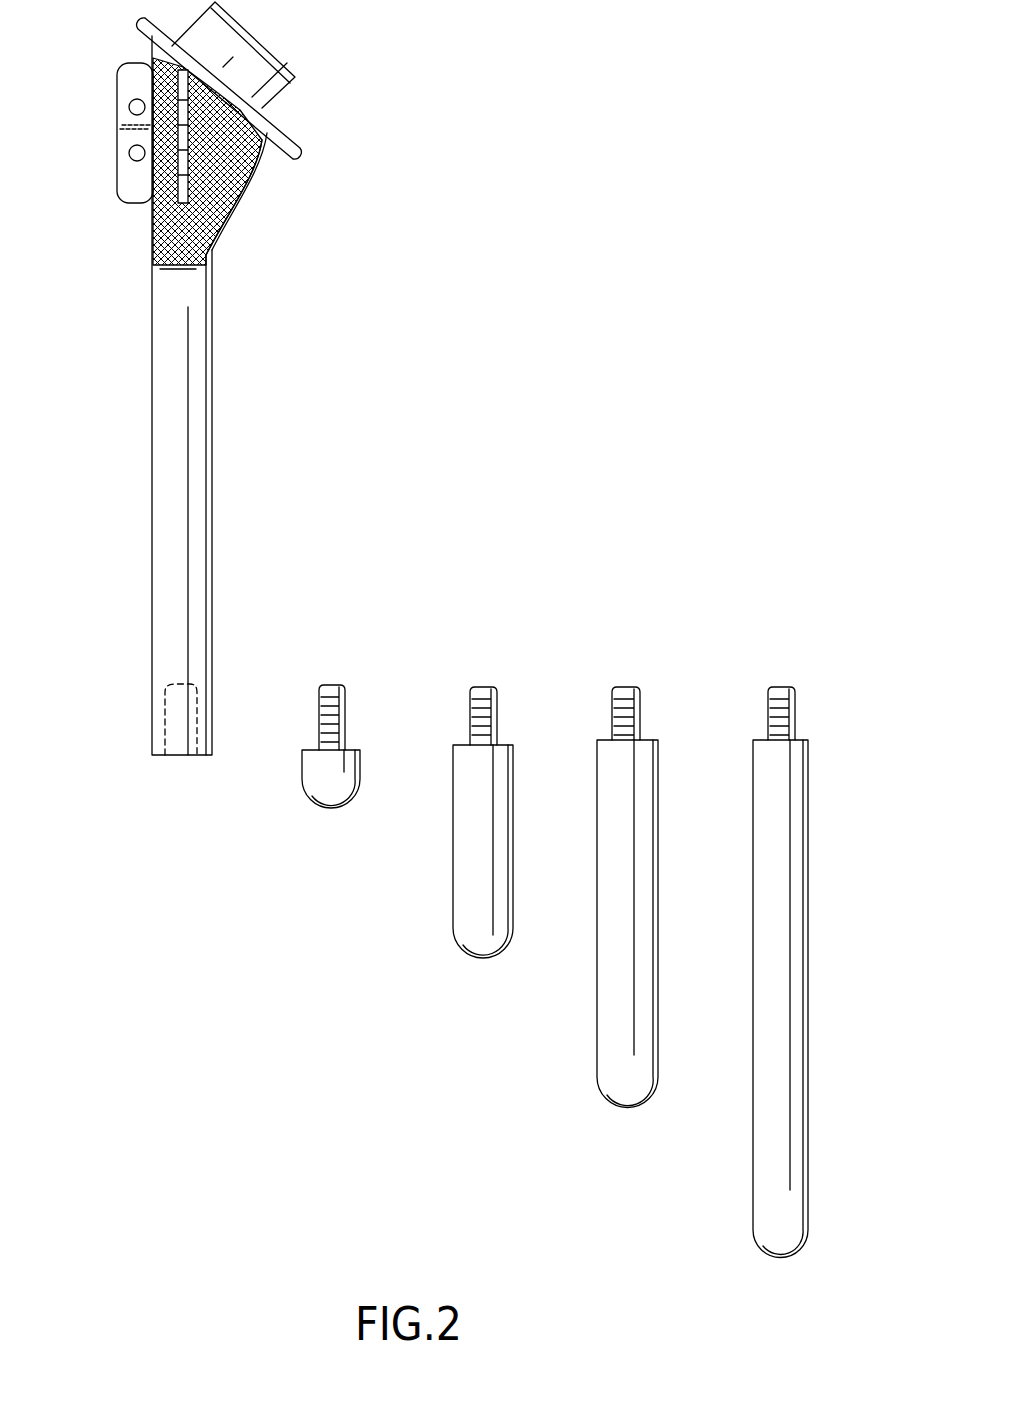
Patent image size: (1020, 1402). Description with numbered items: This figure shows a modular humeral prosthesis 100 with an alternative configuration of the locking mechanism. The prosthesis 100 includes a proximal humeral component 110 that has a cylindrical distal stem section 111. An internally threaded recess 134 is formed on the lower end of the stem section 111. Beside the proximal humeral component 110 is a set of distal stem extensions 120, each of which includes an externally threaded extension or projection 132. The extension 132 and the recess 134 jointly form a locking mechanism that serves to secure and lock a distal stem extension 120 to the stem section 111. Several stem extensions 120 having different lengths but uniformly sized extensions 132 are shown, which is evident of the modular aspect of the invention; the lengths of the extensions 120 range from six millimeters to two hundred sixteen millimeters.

The prosthesis 100 is at (256, 372).
The proximal humeral component 110 is at (212, 420).
The distal stem section 111 is at (200, 520).
The internally threaded recess 134 is at (178, 735).
The externally threaded extension 132 is at (768, 700).
The distal stem extension 120 is at (453, 908).